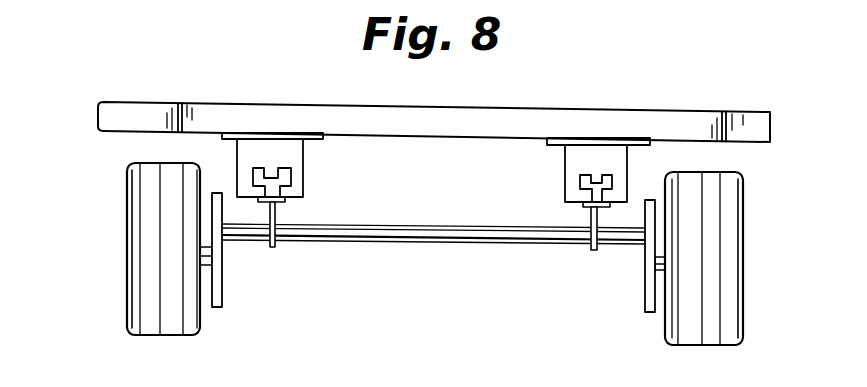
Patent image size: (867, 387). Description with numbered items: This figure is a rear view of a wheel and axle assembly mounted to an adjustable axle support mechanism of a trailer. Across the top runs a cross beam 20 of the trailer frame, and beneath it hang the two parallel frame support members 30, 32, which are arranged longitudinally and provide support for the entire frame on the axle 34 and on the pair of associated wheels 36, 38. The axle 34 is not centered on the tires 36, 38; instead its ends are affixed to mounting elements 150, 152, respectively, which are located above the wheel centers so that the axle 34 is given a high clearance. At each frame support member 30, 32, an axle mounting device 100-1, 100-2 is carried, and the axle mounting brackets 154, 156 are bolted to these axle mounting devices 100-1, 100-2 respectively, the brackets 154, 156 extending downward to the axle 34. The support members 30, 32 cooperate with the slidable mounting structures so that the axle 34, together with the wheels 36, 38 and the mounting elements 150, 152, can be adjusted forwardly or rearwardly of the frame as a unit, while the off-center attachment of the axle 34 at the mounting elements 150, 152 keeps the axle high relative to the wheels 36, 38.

The cross beam 20 is at (770, 127).
The frame support member 30 is at (303, 163).
The frame support member 32 is at (565, 163).
The axle 34 is at (433, 228).
The wheel 36 is at (743, 207).
The wheel 38 is at (127, 173).
The axle mounting device 100-1 is at (598, 194).
The axle mounting device 100-2 is at (277, 186).
The mounting element 150 is at (645, 265).
The mounting element 152 is at (222, 258).
The axle mounting bracket 154 is at (586, 218).
The axle mounting bracket 156 is at (276, 212).